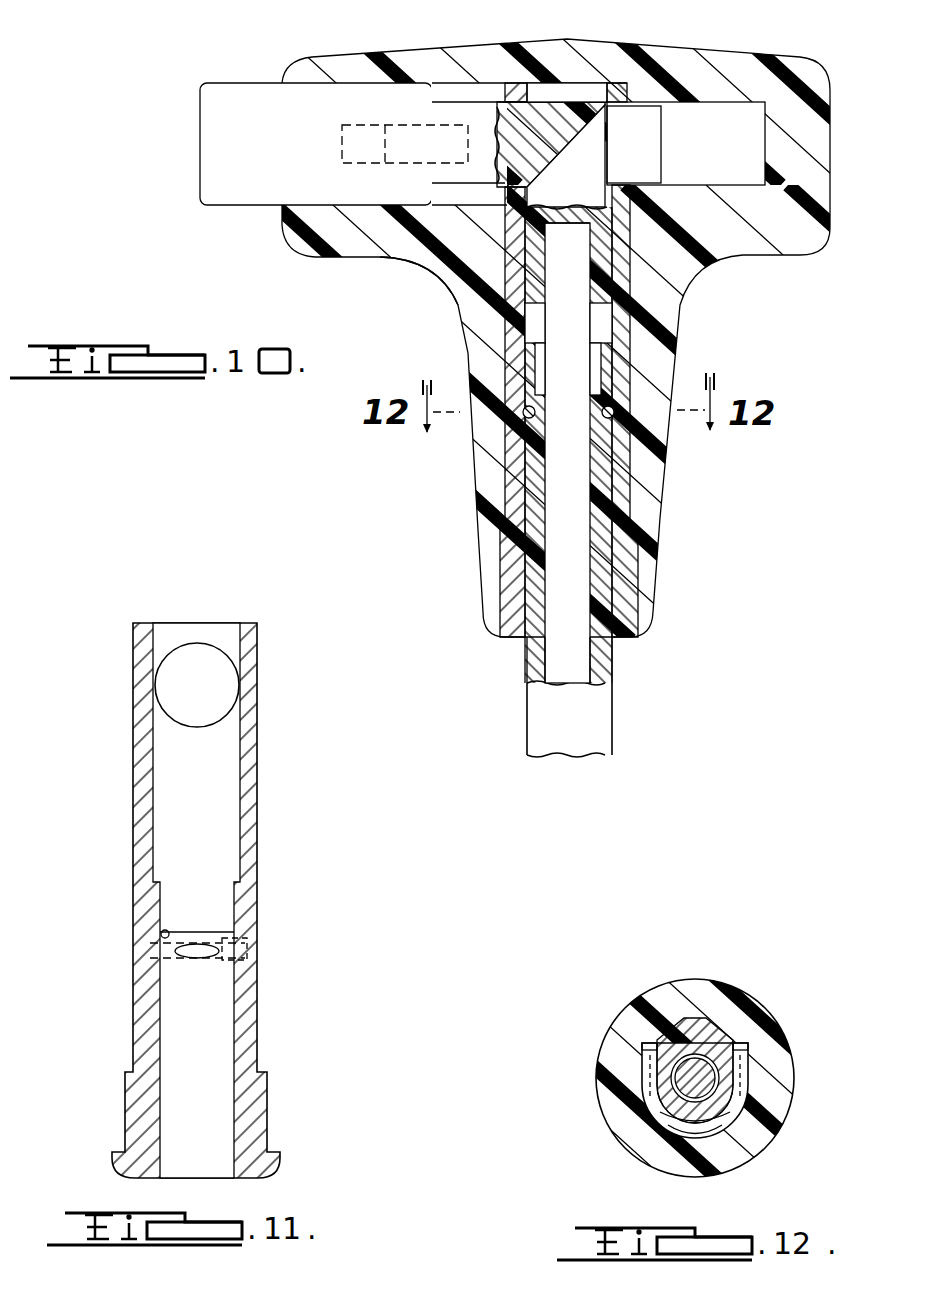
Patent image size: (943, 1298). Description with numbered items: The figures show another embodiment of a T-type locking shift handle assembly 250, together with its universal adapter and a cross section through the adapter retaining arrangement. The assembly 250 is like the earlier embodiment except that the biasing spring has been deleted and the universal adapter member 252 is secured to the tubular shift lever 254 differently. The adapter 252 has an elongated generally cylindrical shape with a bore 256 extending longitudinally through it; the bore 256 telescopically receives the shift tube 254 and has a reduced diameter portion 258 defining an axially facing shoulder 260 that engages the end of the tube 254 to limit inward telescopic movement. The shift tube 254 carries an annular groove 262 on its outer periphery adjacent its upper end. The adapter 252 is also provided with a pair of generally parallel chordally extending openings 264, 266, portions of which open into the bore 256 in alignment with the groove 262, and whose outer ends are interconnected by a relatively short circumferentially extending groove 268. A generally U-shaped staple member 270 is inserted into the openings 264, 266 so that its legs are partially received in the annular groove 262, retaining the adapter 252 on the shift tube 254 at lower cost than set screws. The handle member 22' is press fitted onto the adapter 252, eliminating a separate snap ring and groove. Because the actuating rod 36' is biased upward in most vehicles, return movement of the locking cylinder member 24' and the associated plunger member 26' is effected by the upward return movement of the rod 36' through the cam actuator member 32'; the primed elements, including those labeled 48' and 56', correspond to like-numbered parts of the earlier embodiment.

In FIG. 10, the handle member 22' is at (620, 360).
In FIG. 12, the handle member 22' is at (755, 969).
In FIG. 10, the locking cylinder member 24' is at (273, 144).
In FIG. 10, the plunger member 26' is at (613, 97).
In FIG. 10, the cam actuator member 32' is at (419, 283).
In FIG. 10, the actuating rod 36' is at (618, 490).
In FIG. 10, the spring (hidden) 48' is at (386, 95).
In FIG. 10, the bore 56' is at (643, 263).
In FIG. 10, the shift handle assembly 250 is at (774, 352).
In FIG. 12, the shift handle assembly 250 is at (786, 1012).
In FIG. 10, the universal adapter member 252 is at (614, 501).
In FIG. 11, the universal adapter member 252 is at (298, 765).
In FIG. 12, the universal adapter member 252 is at (762, 1083).
In FIG. 10, the tubular shift lever 254 is at (603, 626).
In FIG. 10, the bore 256 is at (532, 491).
In FIG. 11, the bore 256 is at (234, 829).
In FIG. 10, the reduced diameter portion 258 is at (527, 359).
In FIG. 11, the reduced diameter portion 258 is at (219, 916).
In FIG. 10, the shoulder 260 is at (483, 413).
In FIG. 11, the shoulder 260 is at (160, 931).
In FIG. 10, the annular groove 262 is at (614, 414).
In FIG. 12, the annular groove 262 is at (650, 1082).
In FIG. 12, the chordally extending opening 264 is at (745, 1057).
In FIG. 11, the chordally extending opening 266 is at (245, 938).
In FIG. 12, the chordally extending opening 266 is at (645, 1053).
In FIG. 11, the circumferentially extending groove 268 is at (150, 945).
In FIG. 12, the circumferentially extending groove 268 is at (685, 1122).
In FIG. 12, the U-shaped staple member 270 is at (705, 1130).